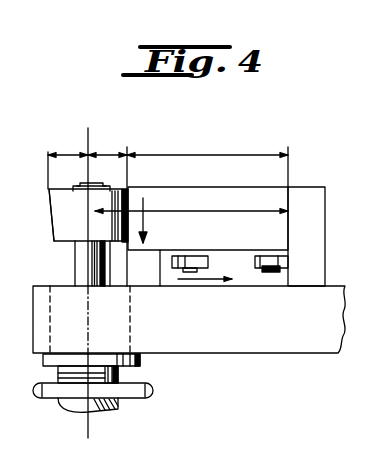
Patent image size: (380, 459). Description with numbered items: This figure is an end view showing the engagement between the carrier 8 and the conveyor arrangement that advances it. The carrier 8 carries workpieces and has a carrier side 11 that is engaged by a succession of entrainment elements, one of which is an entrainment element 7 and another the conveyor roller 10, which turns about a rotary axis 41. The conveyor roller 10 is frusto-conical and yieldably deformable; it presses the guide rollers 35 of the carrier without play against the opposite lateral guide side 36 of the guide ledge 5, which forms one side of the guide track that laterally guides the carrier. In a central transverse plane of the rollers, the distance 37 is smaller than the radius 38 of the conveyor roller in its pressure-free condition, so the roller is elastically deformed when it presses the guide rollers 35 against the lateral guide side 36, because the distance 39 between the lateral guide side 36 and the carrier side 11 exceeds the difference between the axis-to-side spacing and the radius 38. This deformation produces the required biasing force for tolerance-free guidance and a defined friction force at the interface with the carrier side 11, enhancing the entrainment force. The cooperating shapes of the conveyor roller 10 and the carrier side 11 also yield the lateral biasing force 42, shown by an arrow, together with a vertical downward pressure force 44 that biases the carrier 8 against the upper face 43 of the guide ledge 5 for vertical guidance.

The guide ledge 5 is at (315, 275).
The entrainment element 7 is at (44, 224).
The carrier 8 is at (263, 195).
The conveyor roller 10 is at (67, 203).
The carrier side 11 is at (118, 248).
The guide rollers 35 is at (263, 268).
The lateral guide side 36 is at (287, 272).
The distance 37 is at (108, 150).
The radius 38 is at (72, 152).
The distance 39 is at (220, 152).
The rotary axis 41 is at (88, 139).
The lateral biasing force 42 is at (206, 280).
The upper face 43 is at (300, 246).
The vertical downward pressure force 44 is at (147, 220).